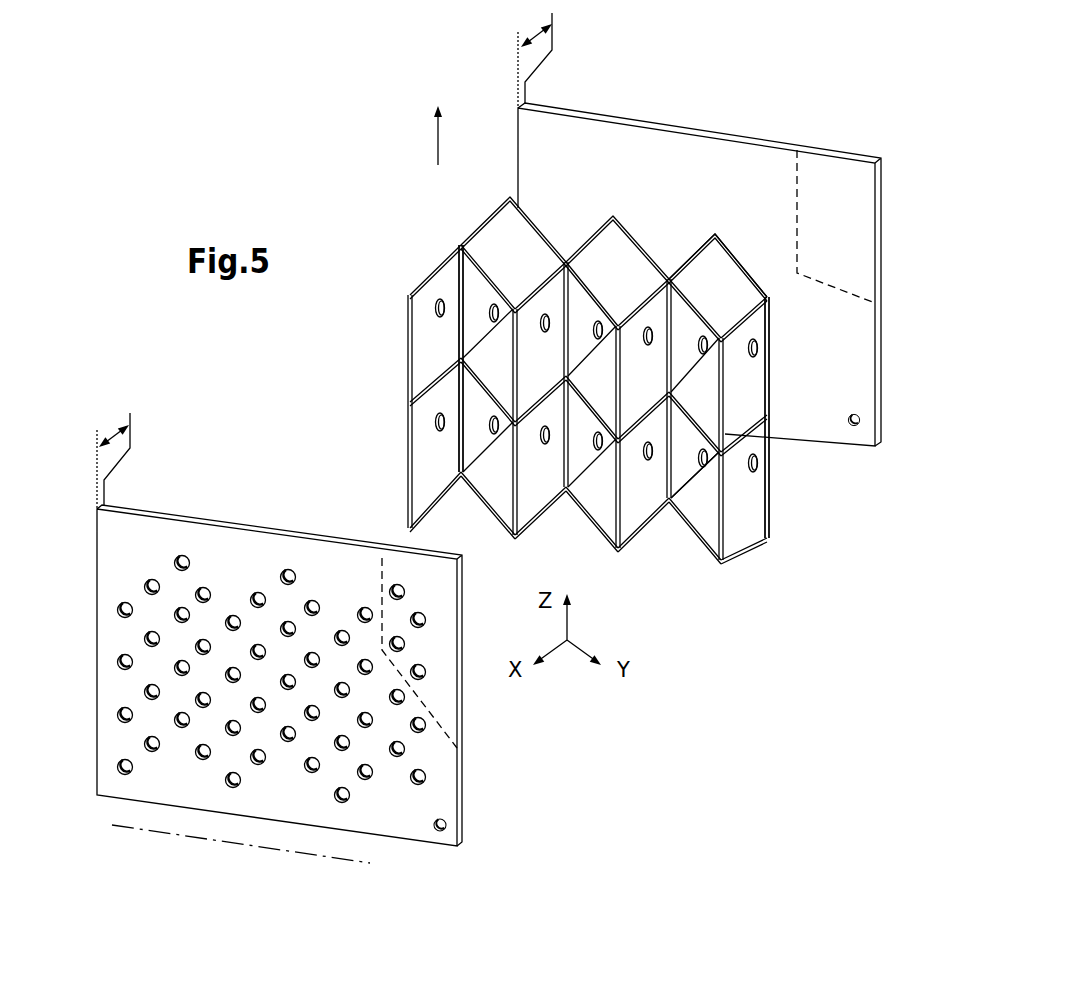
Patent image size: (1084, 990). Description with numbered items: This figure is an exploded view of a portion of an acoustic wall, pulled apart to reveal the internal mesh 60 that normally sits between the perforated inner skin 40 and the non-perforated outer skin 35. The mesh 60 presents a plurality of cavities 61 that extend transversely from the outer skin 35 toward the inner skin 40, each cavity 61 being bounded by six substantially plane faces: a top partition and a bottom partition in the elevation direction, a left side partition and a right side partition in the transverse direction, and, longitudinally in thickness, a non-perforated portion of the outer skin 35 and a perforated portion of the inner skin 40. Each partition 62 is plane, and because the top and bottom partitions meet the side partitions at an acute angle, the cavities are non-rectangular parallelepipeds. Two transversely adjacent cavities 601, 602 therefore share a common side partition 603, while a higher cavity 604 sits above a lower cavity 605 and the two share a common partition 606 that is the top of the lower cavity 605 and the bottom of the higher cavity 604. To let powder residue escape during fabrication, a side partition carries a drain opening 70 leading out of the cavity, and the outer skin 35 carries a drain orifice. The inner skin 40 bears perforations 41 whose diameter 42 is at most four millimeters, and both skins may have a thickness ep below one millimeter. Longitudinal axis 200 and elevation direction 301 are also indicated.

The outer skin 35 is at (880, 153).
The inner skin 40 is at (309, 607).
The perforation 41 is at (417, 734).
The diameter 42 is at (244, 502).
The internal mesh 60 is at (788, 318).
The cavity 61 is at (712, 510).
The partition 62 is at (612, 395).
The drain opening 70 is at (758, 350).
The longitudinal axis 200 is at (178, 833).
The vertical direction 301 is at (423, 132).
The transversely adjacent cavity 601 is at (427, 338).
The transversely adjacent cavity 602 is at (496, 342).
The common side partition 603 is at (457, 272).
The higher cavity 604 is at (586, 336).
The lower cavity 605 is at (603, 496).
The common partition 606 is at (598, 396).